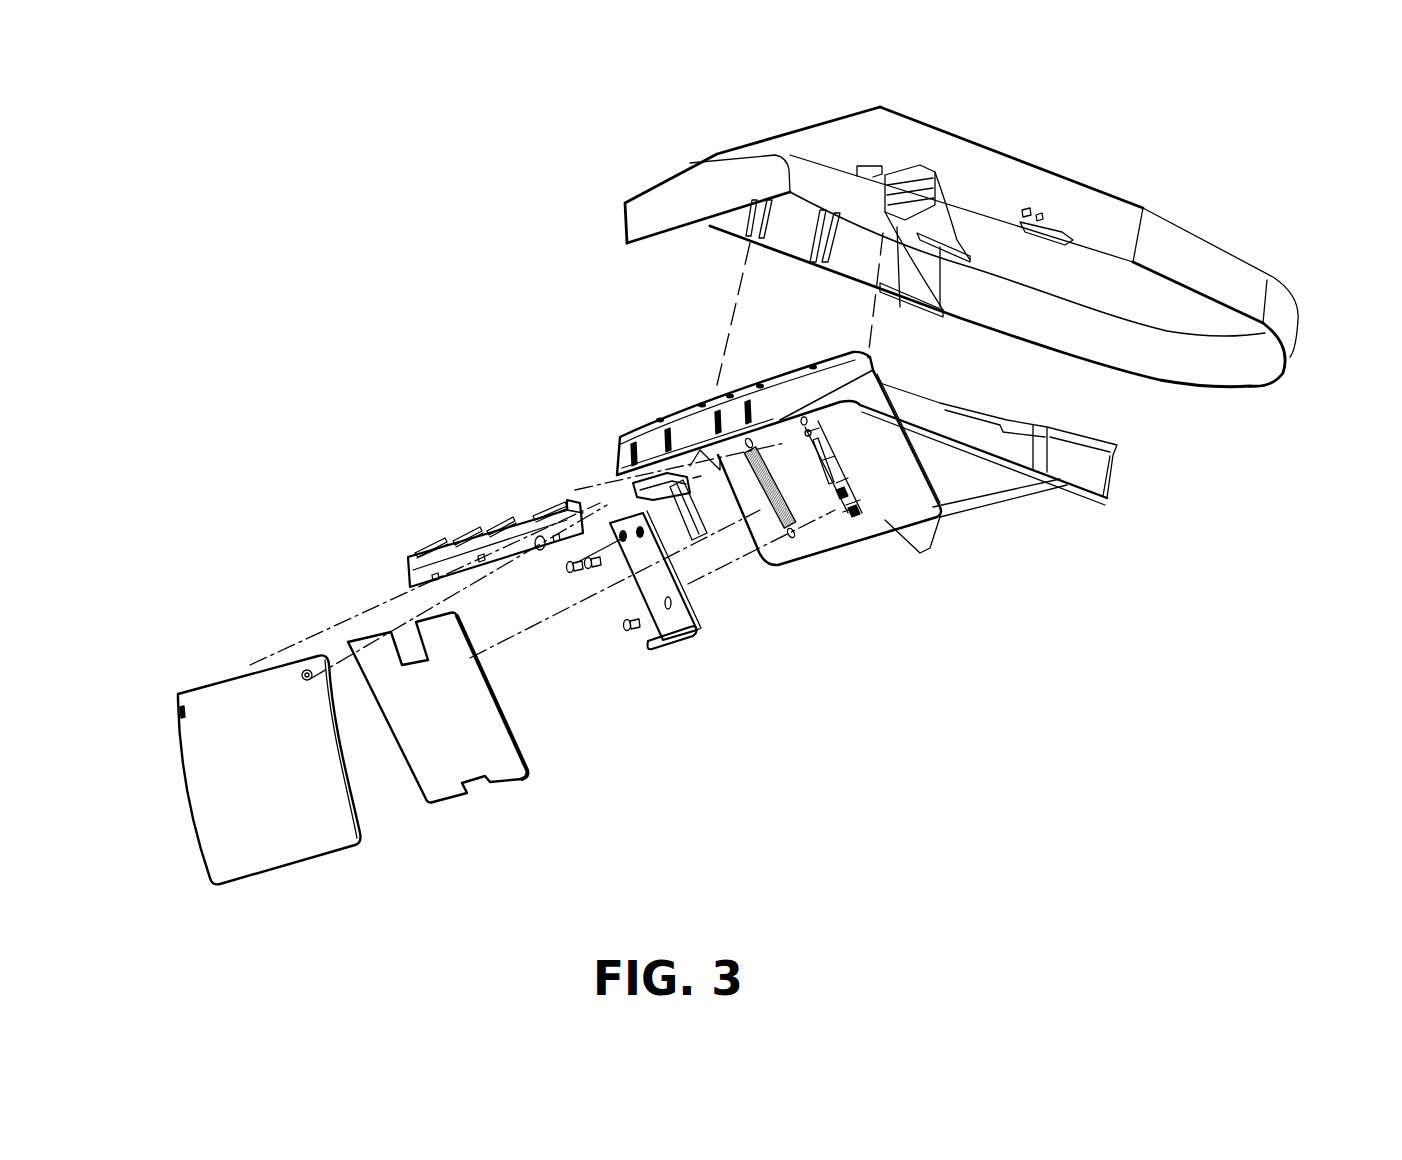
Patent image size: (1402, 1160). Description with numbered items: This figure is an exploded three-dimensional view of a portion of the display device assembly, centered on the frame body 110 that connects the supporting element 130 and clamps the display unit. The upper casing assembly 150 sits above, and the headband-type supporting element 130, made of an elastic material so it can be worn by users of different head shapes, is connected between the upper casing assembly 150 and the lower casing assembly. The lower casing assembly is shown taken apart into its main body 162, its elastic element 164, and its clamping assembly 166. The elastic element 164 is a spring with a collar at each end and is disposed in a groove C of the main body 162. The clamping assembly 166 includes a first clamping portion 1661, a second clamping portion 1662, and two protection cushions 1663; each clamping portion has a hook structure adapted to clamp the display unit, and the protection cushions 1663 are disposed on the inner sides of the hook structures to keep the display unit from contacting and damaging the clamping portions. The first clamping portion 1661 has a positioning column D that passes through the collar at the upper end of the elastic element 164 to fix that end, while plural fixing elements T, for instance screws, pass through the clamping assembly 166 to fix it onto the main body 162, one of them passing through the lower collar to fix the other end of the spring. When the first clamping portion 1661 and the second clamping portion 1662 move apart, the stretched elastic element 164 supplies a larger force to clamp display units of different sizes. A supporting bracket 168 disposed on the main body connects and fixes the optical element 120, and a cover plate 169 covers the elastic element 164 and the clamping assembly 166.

The frame body 110 is at (157, 123).
The optical element 120 is at (192, 771).
The supporting element 130 is at (1290, 318).
The upper casing assembly 150 is at (637, 225).
The main body 162 is at (685, 430).
The elastic element 164 is at (793, 495).
The clamping assembly 166 is at (318, 113).
The supporting bracket 168 is at (410, 575).
The cover plate 169 is at (437, 790).
The first clamping portion 1661 is at (637, 490).
The second clamping portion 1662 is at (693, 630).
The protection cushions 1663 is at (652, 510).
The groove C is at (848, 520).
The positioning column D is at (697, 480).
The fixing elements T is at (592, 566).